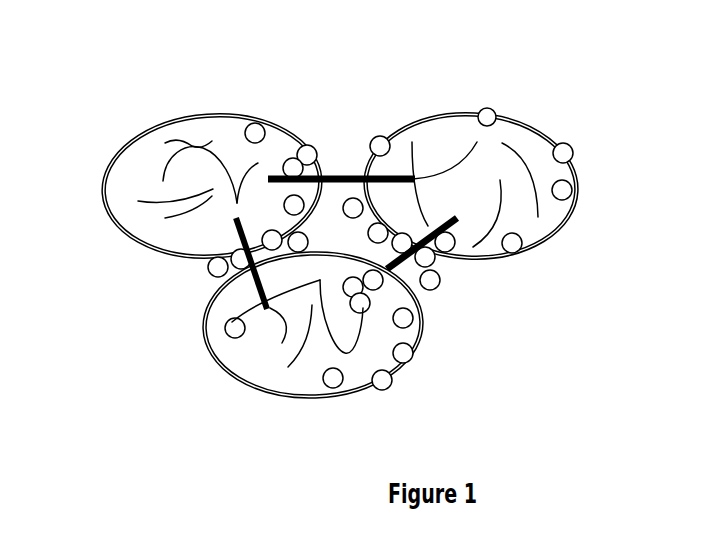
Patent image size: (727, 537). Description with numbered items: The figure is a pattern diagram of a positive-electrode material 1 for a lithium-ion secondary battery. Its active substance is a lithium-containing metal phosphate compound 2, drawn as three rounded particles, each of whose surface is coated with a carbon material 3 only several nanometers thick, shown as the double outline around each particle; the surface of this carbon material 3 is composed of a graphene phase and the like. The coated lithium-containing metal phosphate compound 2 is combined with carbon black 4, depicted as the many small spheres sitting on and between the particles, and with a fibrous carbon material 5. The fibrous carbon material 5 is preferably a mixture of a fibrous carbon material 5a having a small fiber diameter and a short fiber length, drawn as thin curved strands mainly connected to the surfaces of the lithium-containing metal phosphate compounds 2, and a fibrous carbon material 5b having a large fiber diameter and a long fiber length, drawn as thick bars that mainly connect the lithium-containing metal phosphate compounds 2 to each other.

The positive-electrode material 1 is at (575, 85).
The lithium-containing metal phosphate compound 2 is at (152, 227).
The carbon material 3 is at (133, 130).
The carbon black 4 is at (512, 255).
The fibrous carbon material 5 is at (340, 58).
The fibrous carbon material having a small fiber diameter and a short fiber length 5a is at (218, 139).
The fibrous carbon material having a large fiber diameter and a long fiber length 5b is at (350, 177).